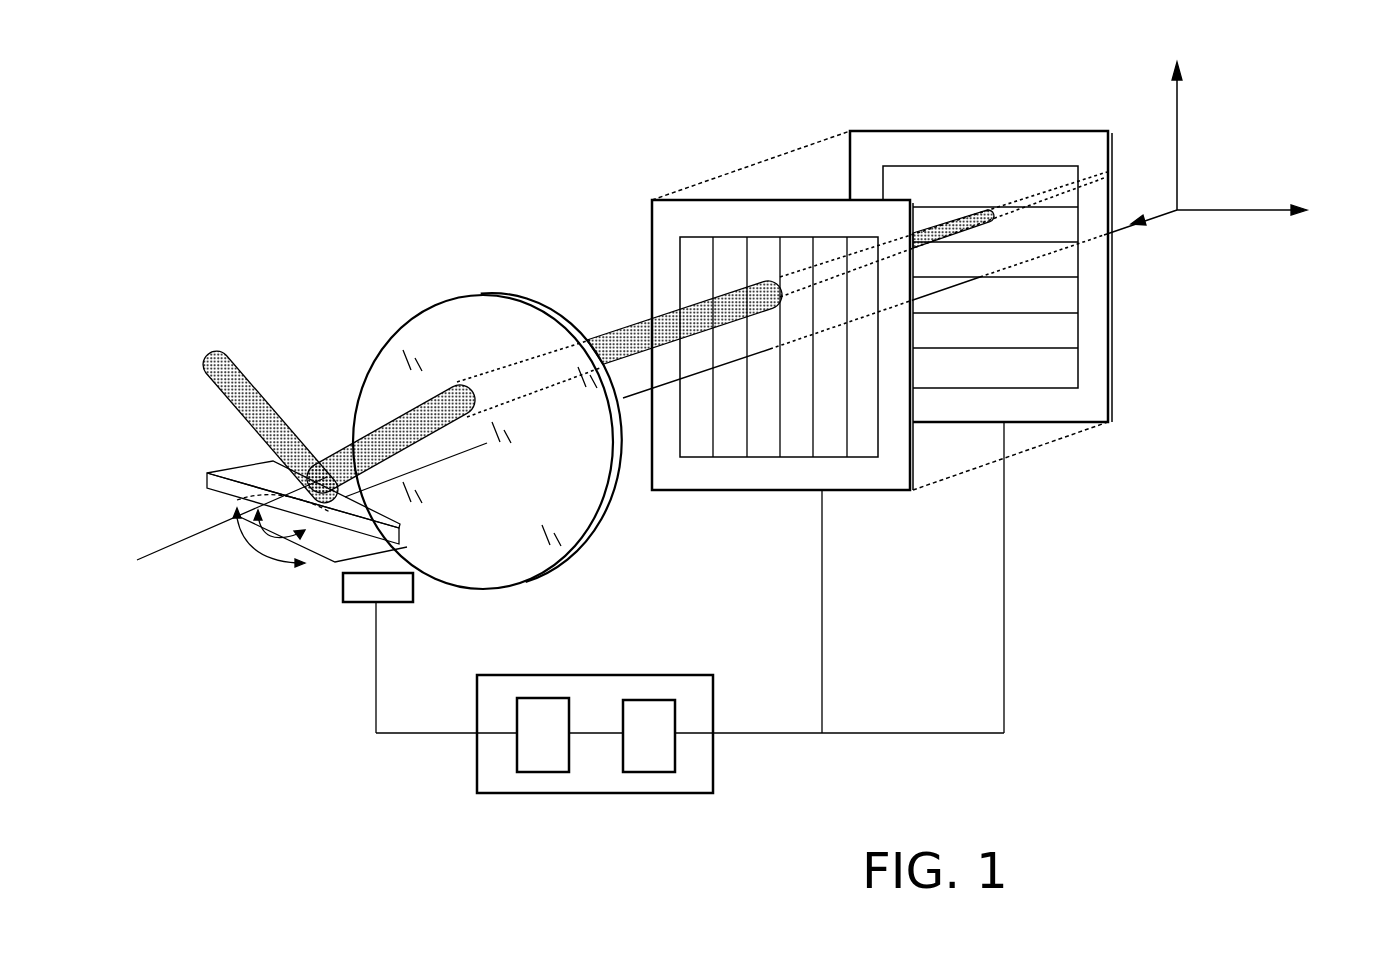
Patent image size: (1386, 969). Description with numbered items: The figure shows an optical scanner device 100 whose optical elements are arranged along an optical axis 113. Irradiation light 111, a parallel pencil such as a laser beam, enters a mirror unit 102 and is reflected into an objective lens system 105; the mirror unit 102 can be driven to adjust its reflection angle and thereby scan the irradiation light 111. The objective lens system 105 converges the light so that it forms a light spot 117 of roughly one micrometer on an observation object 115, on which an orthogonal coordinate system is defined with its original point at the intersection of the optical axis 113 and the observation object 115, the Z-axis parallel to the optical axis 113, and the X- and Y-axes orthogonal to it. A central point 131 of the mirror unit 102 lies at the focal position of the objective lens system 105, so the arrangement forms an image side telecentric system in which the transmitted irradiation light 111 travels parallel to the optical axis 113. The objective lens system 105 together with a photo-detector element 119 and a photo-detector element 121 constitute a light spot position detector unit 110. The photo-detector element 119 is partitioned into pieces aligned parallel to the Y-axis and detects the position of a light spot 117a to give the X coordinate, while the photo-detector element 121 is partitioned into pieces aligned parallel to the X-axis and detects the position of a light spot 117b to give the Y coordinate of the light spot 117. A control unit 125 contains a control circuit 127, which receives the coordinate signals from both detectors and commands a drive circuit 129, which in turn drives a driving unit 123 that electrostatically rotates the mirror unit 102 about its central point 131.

The optical scanner device 100 is at (1073, 507).
The mirror unit 102 is at (337, 543).
The objective lens system 105 is at (448, 332).
The light spot position detector unit 110 is at (521, 357).
The irradiation light 111 is at (390, 437).
The optical axis 113 is at (623, 398).
The observation object 115 is at (1157, 117).
The light spot 117 is at (1107, 172).
The light spot on photo-detector element 119 117a is at (775, 280).
The light spot on photo-detector element 121 117b is at (990, 210).
The photo-detector element 119 is at (665, 227).
The photo-detector element 121 is at (883, 135).
The driving unit 123 is at (393, 607).
The control unit 125 is at (580, 734).
The control circuit 127 is at (652, 777).
The drive circuit 129 is at (517, 752).
The central point 131 is at (237, 503).